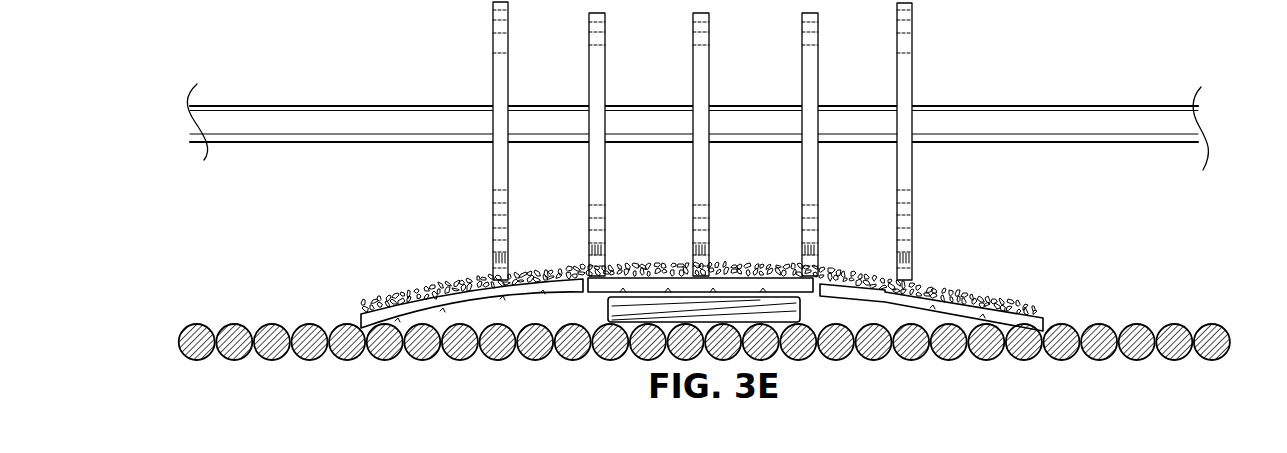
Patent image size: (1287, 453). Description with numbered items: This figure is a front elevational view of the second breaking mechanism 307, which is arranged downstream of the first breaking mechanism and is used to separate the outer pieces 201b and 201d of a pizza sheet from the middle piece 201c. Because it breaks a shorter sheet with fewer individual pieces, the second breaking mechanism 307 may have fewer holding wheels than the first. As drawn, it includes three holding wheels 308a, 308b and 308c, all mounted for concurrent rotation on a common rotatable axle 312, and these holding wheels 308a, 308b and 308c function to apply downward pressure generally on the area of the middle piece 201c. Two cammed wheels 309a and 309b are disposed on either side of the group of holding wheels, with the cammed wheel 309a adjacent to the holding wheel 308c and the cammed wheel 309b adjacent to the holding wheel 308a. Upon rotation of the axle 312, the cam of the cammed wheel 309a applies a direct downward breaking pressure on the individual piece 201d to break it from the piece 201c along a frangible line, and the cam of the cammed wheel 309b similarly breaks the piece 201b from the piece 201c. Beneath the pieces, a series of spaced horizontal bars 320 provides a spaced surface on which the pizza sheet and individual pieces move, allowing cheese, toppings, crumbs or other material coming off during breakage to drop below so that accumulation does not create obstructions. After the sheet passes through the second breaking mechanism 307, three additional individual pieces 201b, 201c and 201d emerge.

The second breaking mechanism 307 is at (224, 59).
The common rotatable axle 312 is at (322, 137).
The cammed wheel 309a is at (497, 53).
The cammed wheel 309b is at (907, 65).
The holding wheel 308a is at (808, 70).
The holding wheel 308b is at (703, 75).
The holding wheel 308c is at (597, 66).
The individual piece 201b is at (943, 285).
The middle piece 201c is at (630, 275).
The individual piece 201d is at (427, 297).
The spaced horizontal bars 320 is at (195, 345).